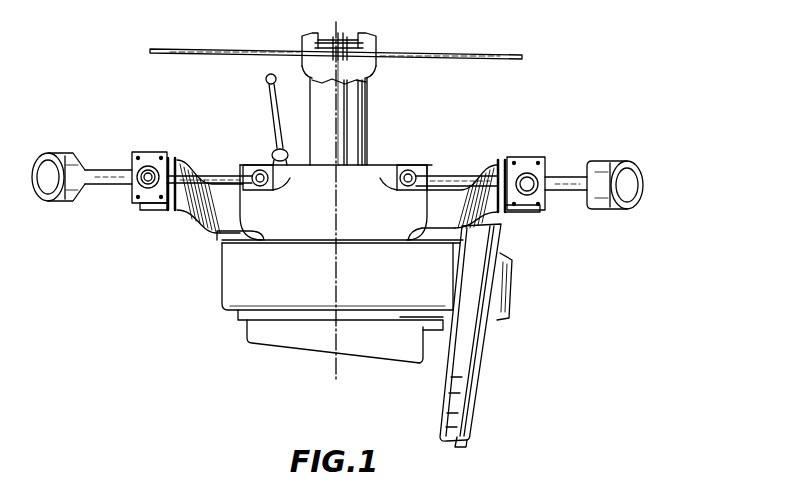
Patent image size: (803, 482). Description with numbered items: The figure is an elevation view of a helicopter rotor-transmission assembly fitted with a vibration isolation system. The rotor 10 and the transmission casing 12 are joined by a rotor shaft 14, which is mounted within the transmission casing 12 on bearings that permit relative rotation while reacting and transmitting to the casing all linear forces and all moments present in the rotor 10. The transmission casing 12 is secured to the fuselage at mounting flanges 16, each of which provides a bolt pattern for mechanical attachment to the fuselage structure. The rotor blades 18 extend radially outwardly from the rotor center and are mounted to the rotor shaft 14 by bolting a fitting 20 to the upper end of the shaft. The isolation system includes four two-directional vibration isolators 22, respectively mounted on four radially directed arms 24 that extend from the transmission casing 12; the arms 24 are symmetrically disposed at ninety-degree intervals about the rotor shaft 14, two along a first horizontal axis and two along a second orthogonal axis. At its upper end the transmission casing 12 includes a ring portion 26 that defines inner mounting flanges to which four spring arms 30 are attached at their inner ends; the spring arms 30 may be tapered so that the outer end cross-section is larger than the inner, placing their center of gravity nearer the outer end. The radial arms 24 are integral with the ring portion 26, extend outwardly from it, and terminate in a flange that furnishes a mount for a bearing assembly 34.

The rotor 10 is at (390, 32).
The transmission casing 12 is at (237, 283).
The rotor shaft 14 is at (358, 118).
The mounting flanges 16 is at (132, 157).
The rotor blades 18 is at (482, 52).
The fitting 20 is at (324, 31).
The two-directional vibration isolators 22 is at (124, 230).
The radially directed arms 24 is at (200, 230).
The ring portion 26 is at (387, 162).
The spring arms 30 is at (206, 170).
The bearing assembly 34 is at (148, 160).